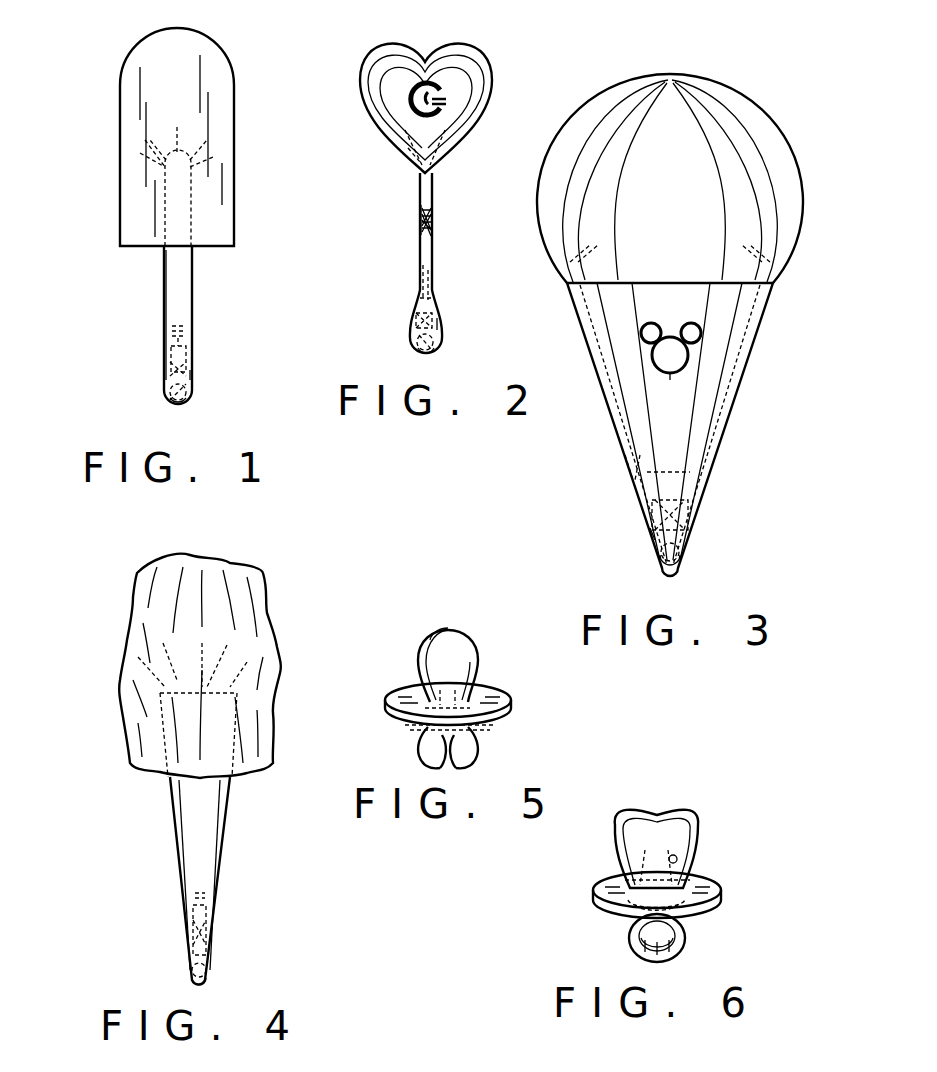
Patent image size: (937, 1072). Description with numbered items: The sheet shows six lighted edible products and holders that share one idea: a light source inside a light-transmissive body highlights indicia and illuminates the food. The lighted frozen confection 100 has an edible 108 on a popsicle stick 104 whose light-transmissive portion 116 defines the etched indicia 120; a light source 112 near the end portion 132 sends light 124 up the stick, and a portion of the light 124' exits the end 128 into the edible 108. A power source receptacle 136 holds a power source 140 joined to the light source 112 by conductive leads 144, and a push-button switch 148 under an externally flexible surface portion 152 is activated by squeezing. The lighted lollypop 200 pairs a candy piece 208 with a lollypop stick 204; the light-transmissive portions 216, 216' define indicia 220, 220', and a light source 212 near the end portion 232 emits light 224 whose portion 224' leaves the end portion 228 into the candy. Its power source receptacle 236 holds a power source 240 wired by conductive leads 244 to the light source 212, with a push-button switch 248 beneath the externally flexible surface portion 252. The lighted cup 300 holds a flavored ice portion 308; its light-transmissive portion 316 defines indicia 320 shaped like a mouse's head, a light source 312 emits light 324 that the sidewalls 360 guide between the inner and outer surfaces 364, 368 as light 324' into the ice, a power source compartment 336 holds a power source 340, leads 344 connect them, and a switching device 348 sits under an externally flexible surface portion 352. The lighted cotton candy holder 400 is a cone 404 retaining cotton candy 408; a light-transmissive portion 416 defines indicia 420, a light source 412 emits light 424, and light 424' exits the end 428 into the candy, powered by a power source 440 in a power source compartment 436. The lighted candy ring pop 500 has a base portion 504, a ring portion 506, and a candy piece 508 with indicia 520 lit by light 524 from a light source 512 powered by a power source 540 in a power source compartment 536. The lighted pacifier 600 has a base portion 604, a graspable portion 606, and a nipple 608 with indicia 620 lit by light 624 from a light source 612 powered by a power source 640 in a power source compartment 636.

In FIG. 1, the lighted frozen confection 100 is at (121, 62).
In FIG. 1, the popsicle stick 104 is at (192, 255).
In FIG. 1, the edible 108 is at (120, 172).
In FIG. 1, the light source 112 is at (195, 340).
In FIG. 1, the light-transmissive portion 116 is at (192, 300).
In FIG. 1, the indicia 120 is at (167, 290).
In FIG. 1, the light 124 is at (136, 325).
In FIG. 1, the light portion 124' is at (137, 131).
In FIG. 1, the end of popsicle stick 128 is at (192, 208).
In FIG. 1, the end portion of popsicle stick 132 is at (188, 402).
In FIG. 1, the power source receptacle 136 is at (167, 403).
In FIG. 1, the power source 140 is at (190, 388).
In FIG. 1, the conductive leads 144 is at (167, 365).
In FIG. 1, the push-button switch 148 is at (193, 367).
In FIG. 1, the externally flexible surface portion 152 is at (190, 375).
In FIG. 2, the lighted lollypop 200 is at (370, 35).
In FIG. 2, the lollypop stick 204 is at (433, 192).
In FIG. 2, the candy piece 208 is at (492, 88).
In FIG. 2, the light source 212 is at (433, 298).
In FIG. 2, the light-transmissive portion of lollypop stick 216 is at (390, 214).
In FIG. 2, the light-transmissive portion of candy piece 216' is at (461, 77).
In FIG. 2, the indicia 220 is at (451, 229).
In FIG. 2, the indicia 220' is at (379, 100).
In FIG. 2, the light 224 is at (393, 269).
In FIG. 2, the light portion 224' is at (386, 167).
In FIG. 2, the end portion of lollypop stick 228 is at (440, 165).
In FIG. 2, the end portion of lollypop stick 232 is at (428, 355).
In FIG. 2, the power source receptacle 236 is at (420, 360).
In FIG. 2, the power source 240 is at (415, 350).
In FIG. 2, the conductive leads 244 is at (417, 315).
In FIG. 2, the push-button switch 248 is at (415, 322).
In FIG. 2, the externally flexible surface portion 252 is at (437, 322).
In FIG. 3, the lighted cup 300 is at (745, 418).
In FIG. 3, the flavored ice or snow portion 308 is at (773, 117).
In FIG. 3, the light source 312 is at (710, 463).
In FIG. 3, the light-transmissive portion 316 is at (673, 380).
In FIG. 3, the indicia 320 is at (648, 348).
In FIG. 3, the light 324 is at (597, 460).
In FIG. 3, the light portion 324' is at (704, 269).
In FIG. 3, the power source compartment 336 is at (660, 555).
In FIG. 3, the power source 340 is at (683, 557).
In FIG. 3, the tabs 344 is at (703, 500).
In FIG. 3, the switching device 348 is at (703, 517).
In FIG. 3, the externally flexible surface portion 352 is at (650, 532).
In FIG. 3, the sidewalls 360 is at (752, 363).
In FIG. 3, the inner surface 364 is at (613, 362).
In FIG. 3, the outer surface 368 is at (763, 317).
In FIG. 4, the lighted cotton candy holder 400 is at (112, 600).
In FIG. 4, the cone 404 is at (225, 858).
In FIG. 4, the cotton candy 408 is at (122, 650).
In FIG. 4, the light source 412 is at (223, 938).
In FIG. 4, the light-transmissive portion 416 is at (190, 803).
In FIG. 4, the indicia 420 is at (207, 852).
In FIG. 4, the light 424 is at (242, 899).
In FIG. 4, the light portion 424' is at (238, 662).
In FIG. 4, the end of holder 428 is at (130, 710).
In FIG. 4, the power source compartment 436 is at (187, 988).
In FIG. 4, the power source 440 is at (217, 982).
In FIG. 5, the lighted candy ring pop 500 is at (460, 617).
In FIG. 5, the base portion 504 is at (395, 718).
In FIG. 5, the ring portion 506 is at (420, 755).
In FIG. 5, the candy piece 508 is at (477, 643).
In FIG. 5, the light source 512 is at (480, 677).
In FIG. 5, the indicia 520 is at (430, 637).
In FIG. 5, the light 524 is at (420, 672).
In FIG. 5, the power source compartment 536 is at (413, 732).
In FIG. 5, the power source 540 is at (513, 697).
In FIG. 6, the lighted pacifier 600 is at (712, 786).
In FIG. 6, the base portion 604 is at (720, 893).
In FIG. 6, the graspable portion 606 is at (683, 940).
In FIG. 6, the nipple 608 is at (617, 843).
In FIG. 6, the light source 612 is at (617, 878).
In FIG. 6, the indicia 620 is at (683, 833).
In FIG. 6, the light 624 is at (700, 857).
In FIG. 6, the power source compartment 636 is at (617, 918).
In FIG. 6, the power source 640 is at (707, 915).